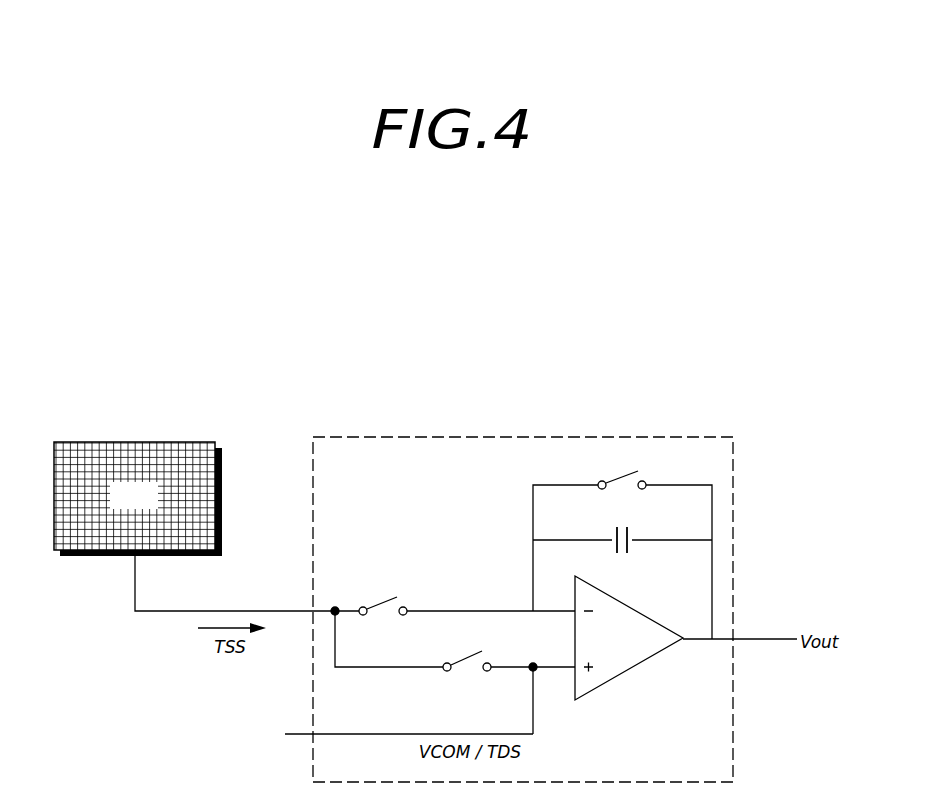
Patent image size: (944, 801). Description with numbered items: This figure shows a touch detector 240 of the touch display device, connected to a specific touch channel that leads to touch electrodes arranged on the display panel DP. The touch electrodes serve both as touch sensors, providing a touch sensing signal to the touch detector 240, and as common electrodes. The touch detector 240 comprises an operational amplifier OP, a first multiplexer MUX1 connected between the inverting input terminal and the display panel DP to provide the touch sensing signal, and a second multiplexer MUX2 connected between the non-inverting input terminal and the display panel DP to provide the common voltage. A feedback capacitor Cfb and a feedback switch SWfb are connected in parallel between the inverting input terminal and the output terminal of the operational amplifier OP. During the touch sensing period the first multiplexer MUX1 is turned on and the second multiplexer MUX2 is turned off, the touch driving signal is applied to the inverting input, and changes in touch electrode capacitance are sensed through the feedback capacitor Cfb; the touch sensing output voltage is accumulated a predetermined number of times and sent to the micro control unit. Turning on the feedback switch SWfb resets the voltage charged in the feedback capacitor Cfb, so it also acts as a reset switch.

The touch detector 240 is at (520, 437).
The display panel DP is at (118, 506).
The first multiplexer MUX1 is at (384, 594).
The second multiplexer MUX2 is at (465, 677).
The operational amplifier OP is at (629, 638).
The feedback switch SWfb is at (622, 470).
The feedback capacitor Cfb is at (620, 529).